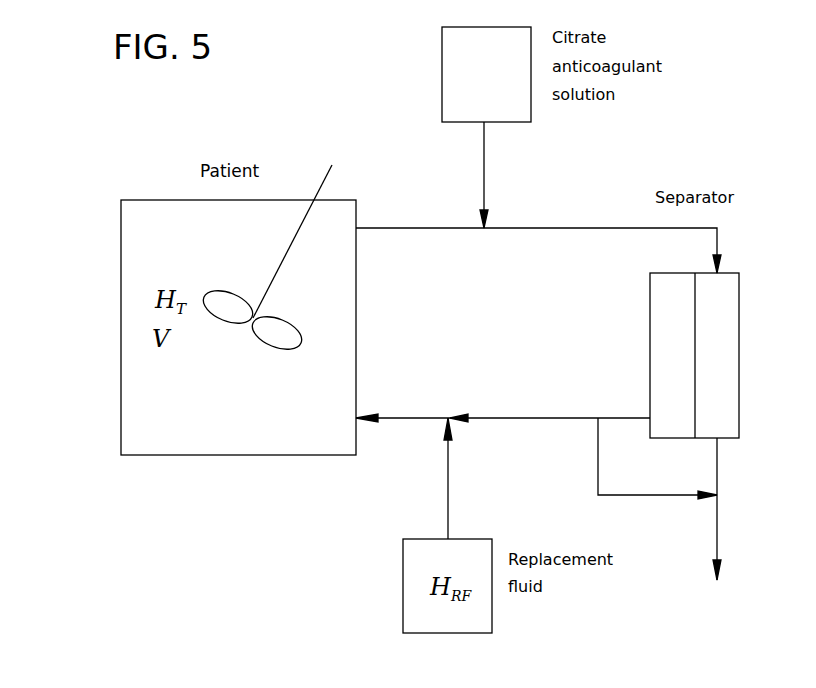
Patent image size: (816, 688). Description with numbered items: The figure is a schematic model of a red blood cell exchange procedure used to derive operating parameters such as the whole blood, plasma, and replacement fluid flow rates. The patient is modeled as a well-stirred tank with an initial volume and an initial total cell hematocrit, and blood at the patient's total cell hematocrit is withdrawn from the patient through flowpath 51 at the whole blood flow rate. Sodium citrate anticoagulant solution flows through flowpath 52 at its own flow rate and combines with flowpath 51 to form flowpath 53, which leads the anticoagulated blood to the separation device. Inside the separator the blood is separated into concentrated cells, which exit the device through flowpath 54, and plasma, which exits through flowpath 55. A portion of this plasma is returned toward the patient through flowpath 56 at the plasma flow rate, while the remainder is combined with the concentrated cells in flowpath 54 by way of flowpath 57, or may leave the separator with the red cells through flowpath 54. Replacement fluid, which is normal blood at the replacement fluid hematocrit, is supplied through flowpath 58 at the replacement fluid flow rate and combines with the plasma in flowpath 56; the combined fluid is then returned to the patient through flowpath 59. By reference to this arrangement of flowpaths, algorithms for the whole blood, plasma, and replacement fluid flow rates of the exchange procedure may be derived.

The flowpath 51 is at (403, 225).
The flowpath 52 is at (489, 136).
The flowpath 53 is at (594, 225).
The flowpath 54 is at (717, 467).
The flowpath 55 is at (601, 415).
The flowpath 56 is at (535, 418).
The flowpath 57 is at (622, 497).
The flowpath 58 is at (448, 500).
The flowpath 59 is at (388, 415).